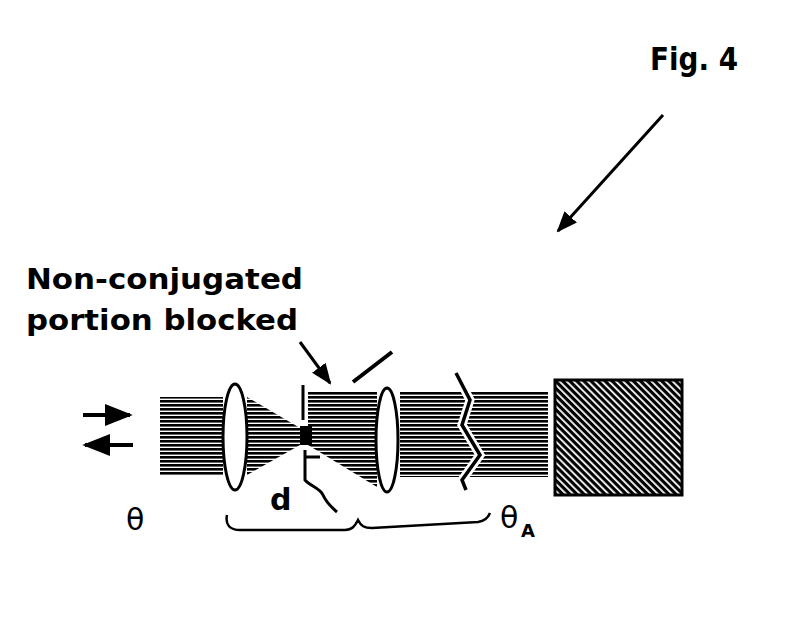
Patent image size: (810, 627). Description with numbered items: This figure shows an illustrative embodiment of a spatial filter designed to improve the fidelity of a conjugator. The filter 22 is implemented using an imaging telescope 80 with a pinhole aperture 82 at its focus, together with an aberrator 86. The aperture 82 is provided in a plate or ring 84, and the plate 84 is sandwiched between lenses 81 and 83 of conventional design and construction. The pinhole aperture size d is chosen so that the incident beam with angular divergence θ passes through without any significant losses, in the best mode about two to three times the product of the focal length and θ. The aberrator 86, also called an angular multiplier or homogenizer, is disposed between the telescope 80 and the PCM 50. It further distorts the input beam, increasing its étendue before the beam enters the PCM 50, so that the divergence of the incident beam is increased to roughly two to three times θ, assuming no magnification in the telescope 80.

The imaging telescope 80 is at (430, 341).
The lens 81 is at (235, 490).
The pinhole aperture 82 is at (302, 423).
The lens 83 is at (388, 492).
The plate 84 is at (360, 527).
The aberrator 86 is at (470, 490).
The filter 22 is at (358, 524).
The PCM 50 is at (647, 495).